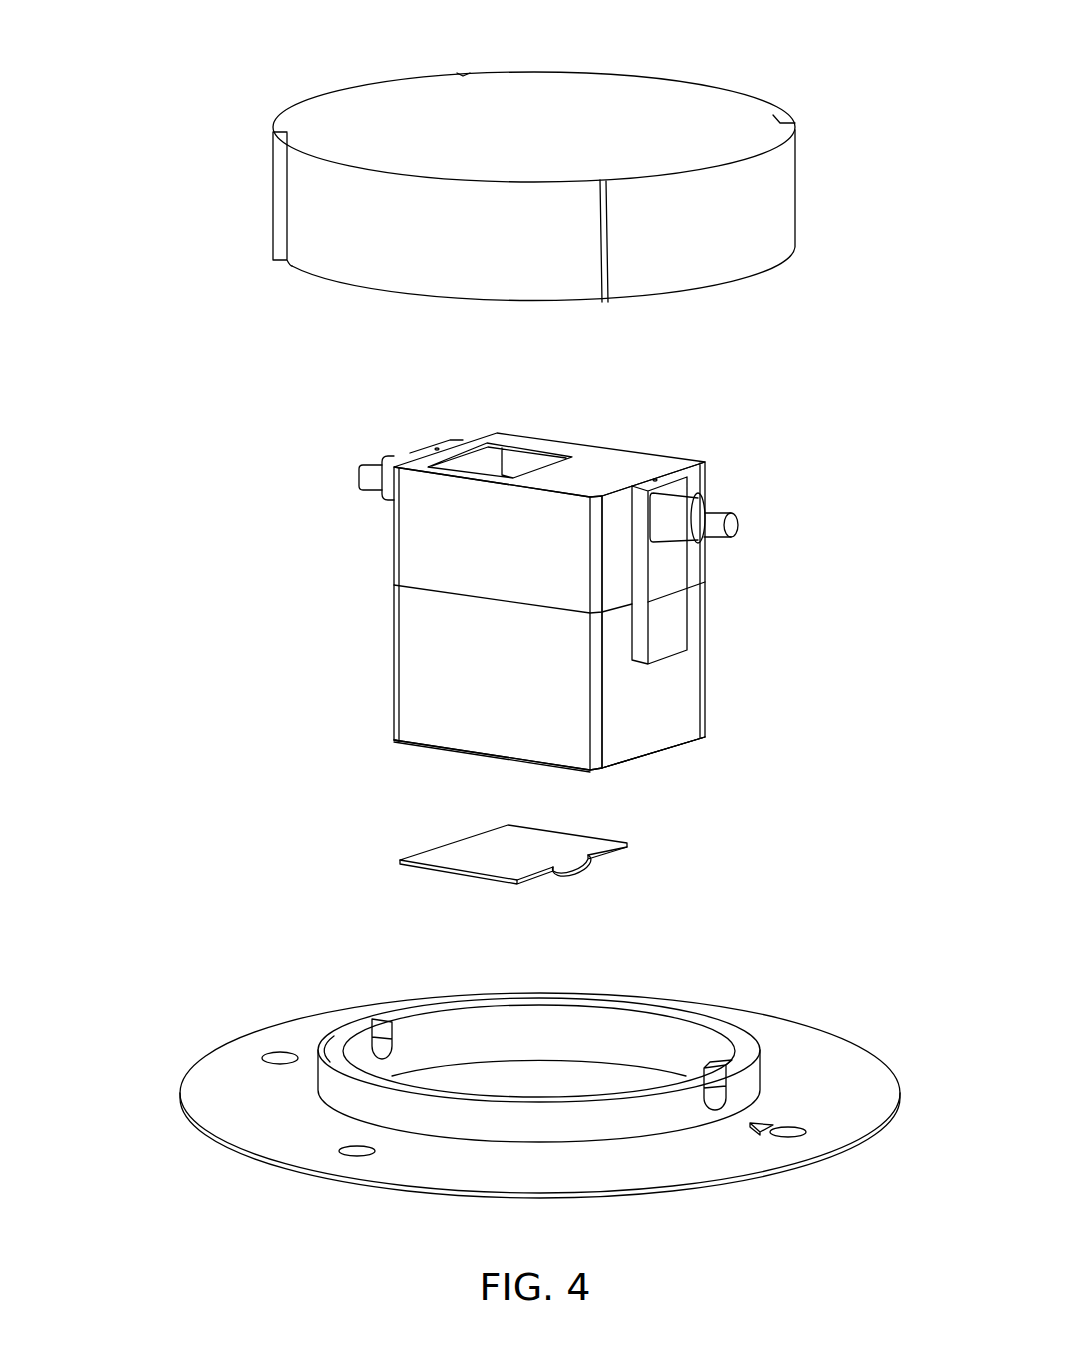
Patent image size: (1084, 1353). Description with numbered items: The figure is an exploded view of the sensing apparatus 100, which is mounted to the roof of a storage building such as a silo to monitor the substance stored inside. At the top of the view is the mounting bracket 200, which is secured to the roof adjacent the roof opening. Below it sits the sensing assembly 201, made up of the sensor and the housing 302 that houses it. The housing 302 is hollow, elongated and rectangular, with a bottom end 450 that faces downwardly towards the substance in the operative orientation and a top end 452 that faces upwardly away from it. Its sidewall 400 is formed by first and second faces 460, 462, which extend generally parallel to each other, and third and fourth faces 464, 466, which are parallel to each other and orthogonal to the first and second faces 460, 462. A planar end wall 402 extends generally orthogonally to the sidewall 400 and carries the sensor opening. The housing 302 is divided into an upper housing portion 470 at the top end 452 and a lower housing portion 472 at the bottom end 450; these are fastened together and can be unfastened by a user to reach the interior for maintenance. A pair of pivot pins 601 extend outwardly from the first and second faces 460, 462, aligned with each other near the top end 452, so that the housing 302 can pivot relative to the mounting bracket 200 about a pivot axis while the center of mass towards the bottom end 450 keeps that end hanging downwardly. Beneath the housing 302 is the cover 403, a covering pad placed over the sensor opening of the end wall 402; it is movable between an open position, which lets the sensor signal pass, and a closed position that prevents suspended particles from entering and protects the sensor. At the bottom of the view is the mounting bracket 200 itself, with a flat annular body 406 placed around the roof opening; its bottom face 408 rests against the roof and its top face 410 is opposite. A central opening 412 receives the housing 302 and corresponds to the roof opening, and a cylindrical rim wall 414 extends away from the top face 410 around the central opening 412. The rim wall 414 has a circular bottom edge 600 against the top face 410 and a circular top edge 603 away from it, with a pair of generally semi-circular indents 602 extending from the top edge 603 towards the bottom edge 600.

The sensing apparatus 100 is at (818, 68).
The mounting bracket 200 is at (327, 76).
The sensing assembly 201 is at (819, 393).
The housing 302 is at (274, 591).
The sidewall 400 is at (700, 677).
The end wall 402 is at (445, 752).
The cover 403 is at (416, 882).
The annular body 406 is at (233, 1084).
The bottom face 408 is at (750, 1172).
The top face 410 is at (858, 1073).
The central opening 412 is at (483, 1054).
The rim wall 414 is at (708, 1011).
The bottom end 450 is at (684, 756).
The top end 452 is at (669, 448).
The first face 460 is at (690, 712).
The second face 462 is at (392, 682).
The third face 464 is at (422, 732).
The fourth face 466 is at (705, 648).
The upper housing portion 470 is at (403, 529).
The lower housing portion 472 is at (629, 759).
The bottom edge 600 is at (647, 1133).
The pivot pins 601 is at (355, 443).
The semi-circular indents 602 is at (384, 1020).
The top edge 603 is at (588, 996).